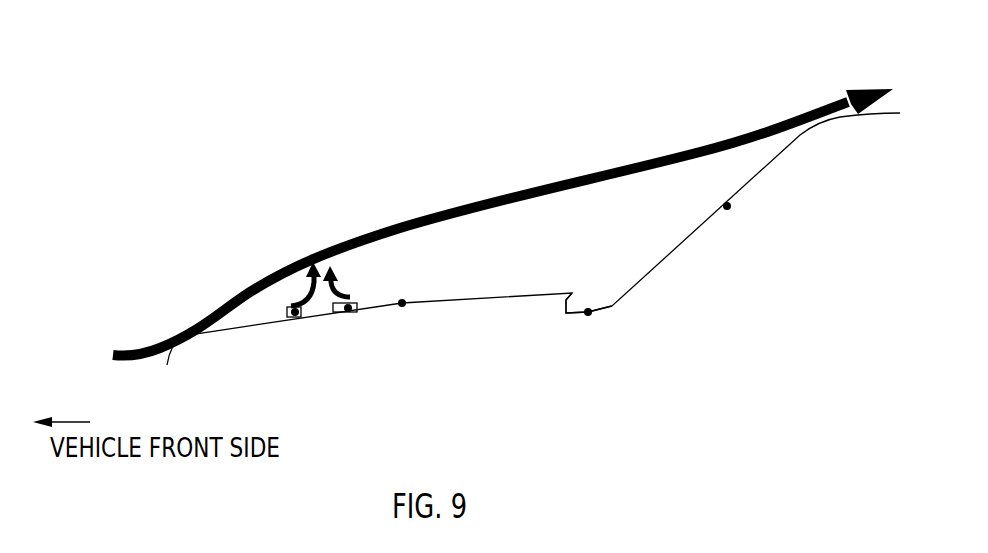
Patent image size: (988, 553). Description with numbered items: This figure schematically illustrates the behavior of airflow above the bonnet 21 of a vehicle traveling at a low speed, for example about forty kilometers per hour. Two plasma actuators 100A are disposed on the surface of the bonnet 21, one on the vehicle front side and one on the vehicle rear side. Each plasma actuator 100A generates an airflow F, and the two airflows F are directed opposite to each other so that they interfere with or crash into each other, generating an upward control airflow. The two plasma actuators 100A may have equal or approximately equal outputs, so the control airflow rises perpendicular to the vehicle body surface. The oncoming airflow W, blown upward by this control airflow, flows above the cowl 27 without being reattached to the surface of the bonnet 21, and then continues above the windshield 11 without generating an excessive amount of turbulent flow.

The windshield 11 is at (727, 206).
The bonnet 21 is at (402, 303).
The cowl 27 is at (588, 312).
The plasma actuator 100A is at (348, 308).
The airflow W is at (503, 222).
The airflow F is at (325, 283).